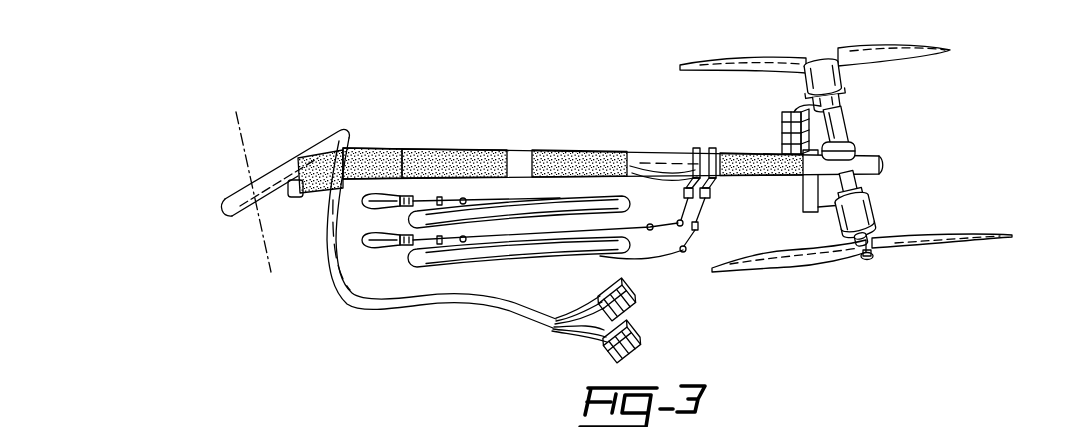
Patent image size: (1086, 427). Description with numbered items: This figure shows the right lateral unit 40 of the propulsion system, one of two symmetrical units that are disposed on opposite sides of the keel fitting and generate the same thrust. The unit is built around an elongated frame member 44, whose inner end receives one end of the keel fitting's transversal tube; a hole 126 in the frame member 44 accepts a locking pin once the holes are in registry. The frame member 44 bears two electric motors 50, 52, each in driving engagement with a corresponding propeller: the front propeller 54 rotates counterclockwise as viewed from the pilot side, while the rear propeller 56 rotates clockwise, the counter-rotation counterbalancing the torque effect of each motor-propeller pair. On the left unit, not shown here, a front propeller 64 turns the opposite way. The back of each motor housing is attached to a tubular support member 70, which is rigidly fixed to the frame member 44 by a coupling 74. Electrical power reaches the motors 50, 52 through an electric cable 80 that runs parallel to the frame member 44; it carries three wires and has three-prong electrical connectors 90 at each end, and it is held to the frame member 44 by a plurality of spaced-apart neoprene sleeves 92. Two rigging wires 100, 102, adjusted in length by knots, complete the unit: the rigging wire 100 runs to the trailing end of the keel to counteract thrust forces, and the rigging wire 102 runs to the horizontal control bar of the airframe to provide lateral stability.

The right lateral unit 40 is at (444, 124).
The elongated frame member 44 is at (664, 150).
The electric motor 50 is at (840, 75).
The electric motor 52 is at (873, 213).
The front propeller 54 is at (930, 54).
The rear propeller 56 is at (950, 247).
The front propeller 64 is at (332, 421).
The tubular support member 70 is at (842, 127).
The coupling 74 is at (845, 148).
The electric cable 80 is at (342, 293).
The electrical connectors 90 is at (634, 297).
The neoprene sleeves 92 is at (487, 148).
The rigging wire 100 is at (476, 197).
The rigging wire 102 is at (474, 268).
The hole 126 is at (256, 213).